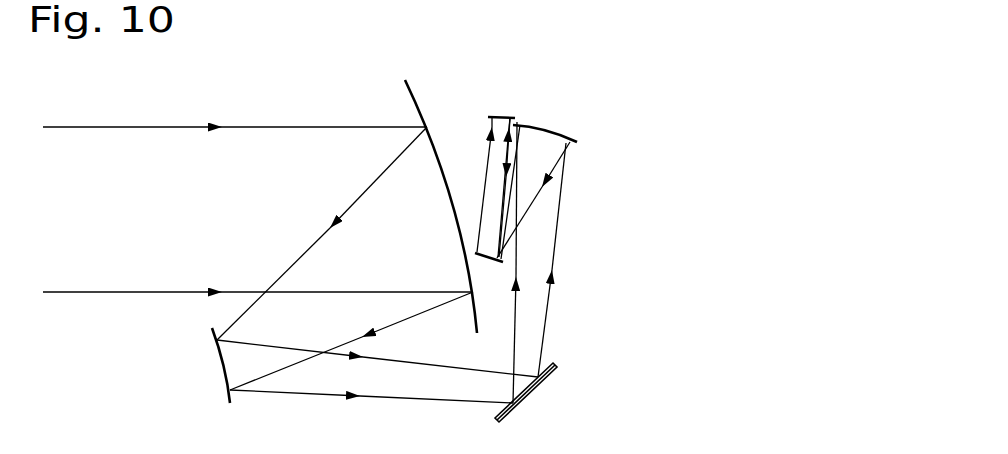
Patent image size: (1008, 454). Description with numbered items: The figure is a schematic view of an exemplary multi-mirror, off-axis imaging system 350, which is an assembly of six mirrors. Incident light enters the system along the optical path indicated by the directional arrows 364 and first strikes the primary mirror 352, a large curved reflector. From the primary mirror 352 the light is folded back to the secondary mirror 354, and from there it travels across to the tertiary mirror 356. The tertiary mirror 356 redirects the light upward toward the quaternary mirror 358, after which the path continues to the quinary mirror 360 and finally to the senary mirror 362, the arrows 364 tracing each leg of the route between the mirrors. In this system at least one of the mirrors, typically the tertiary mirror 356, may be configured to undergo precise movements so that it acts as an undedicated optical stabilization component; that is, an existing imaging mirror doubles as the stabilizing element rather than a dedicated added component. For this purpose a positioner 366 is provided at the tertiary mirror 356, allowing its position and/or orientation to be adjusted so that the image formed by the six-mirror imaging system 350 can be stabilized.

The multi-mirror off-axis imaging system 350 is at (650, 81).
The primary mirror 352 is at (428, 62).
The secondary mirror 354 is at (226, 380).
The tertiary mirror 356 is at (556, 369).
The quaternary mirror 358 is at (560, 133).
The quinary mirror 360 is at (483, 264).
The senary mirror 362 is at (503, 116).
The directional arrows 364 is at (183, 127).
The positioner 366 is at (531, 399).